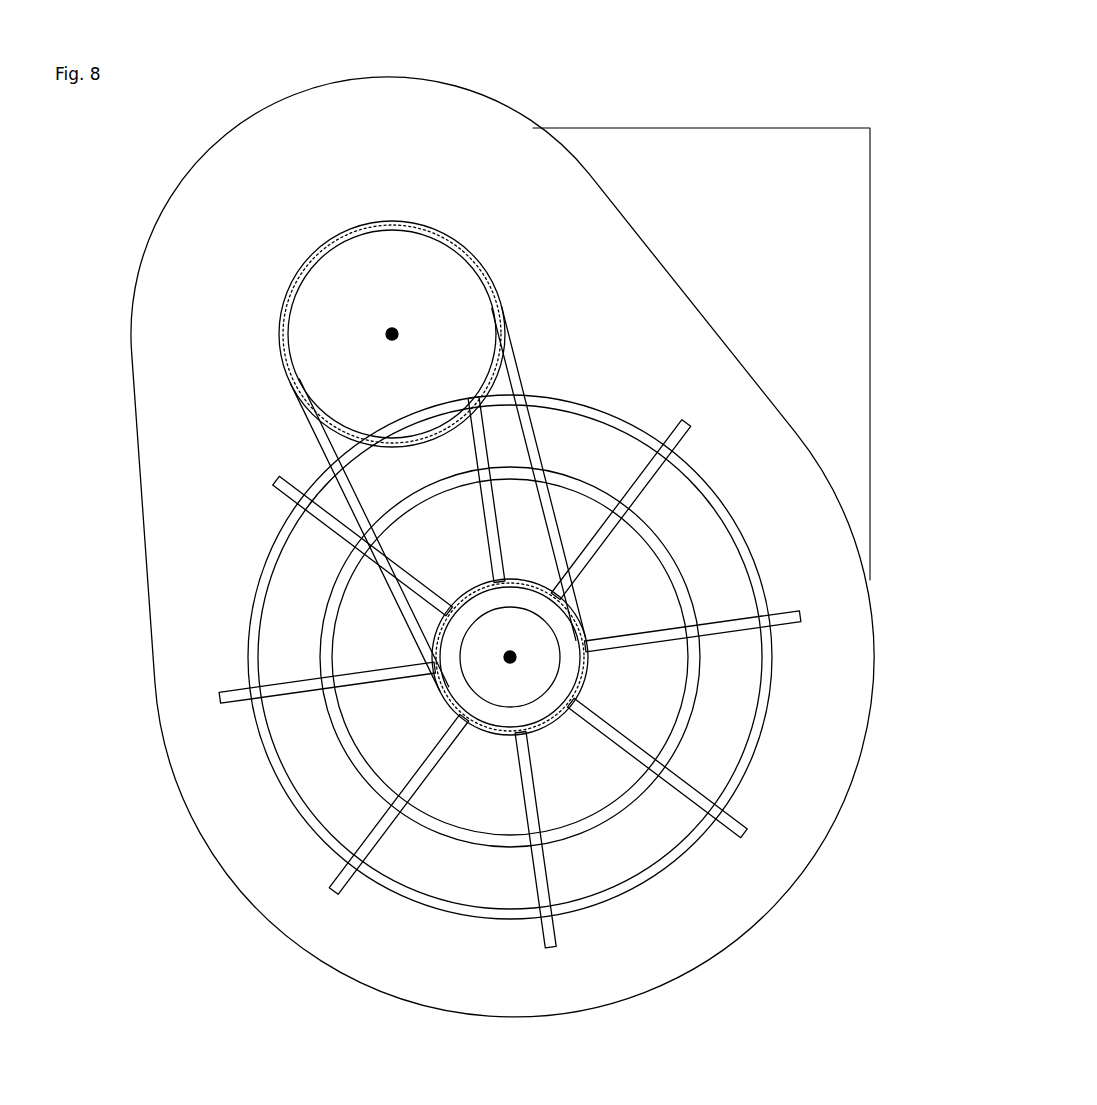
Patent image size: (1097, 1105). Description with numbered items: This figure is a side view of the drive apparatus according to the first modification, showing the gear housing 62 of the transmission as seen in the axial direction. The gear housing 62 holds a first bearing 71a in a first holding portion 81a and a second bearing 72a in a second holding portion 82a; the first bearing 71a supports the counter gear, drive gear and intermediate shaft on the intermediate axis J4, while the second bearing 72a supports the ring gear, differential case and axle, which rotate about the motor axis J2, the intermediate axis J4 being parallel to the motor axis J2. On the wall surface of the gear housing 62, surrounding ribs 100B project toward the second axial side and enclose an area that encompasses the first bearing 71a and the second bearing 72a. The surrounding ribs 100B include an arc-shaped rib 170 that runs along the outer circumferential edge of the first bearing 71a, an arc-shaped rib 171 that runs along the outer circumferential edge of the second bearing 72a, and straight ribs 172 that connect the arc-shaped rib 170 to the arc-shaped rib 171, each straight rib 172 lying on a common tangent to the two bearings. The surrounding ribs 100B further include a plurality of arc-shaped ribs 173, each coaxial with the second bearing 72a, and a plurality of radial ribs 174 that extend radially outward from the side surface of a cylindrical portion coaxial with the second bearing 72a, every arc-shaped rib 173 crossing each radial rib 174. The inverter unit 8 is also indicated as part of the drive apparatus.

The inverter unit 8 is at (873, 229).
The gear housing 62 is at (240, 889).
The arc-shaped rib 170 is at (375, 299).
The first bearing 71a is at (375, 322).
The first holding portion 81a is at (343, 230).
The second bearing 72a is at (463, 671).
The second holding portion 82a is at (509, 671).
The intermediate axis J4 is at (386, 334).
The motor axis J2 is at (504, 657).
The surrounding ribs 100B is at (419, 478).
The straight rib 172 is at (523, 381).
The arc-shaped rib 171 is at (557, 737).
The arc-shaped ribs 173 is at (603, 822).
The radial ribs 174 is at (737, 809).